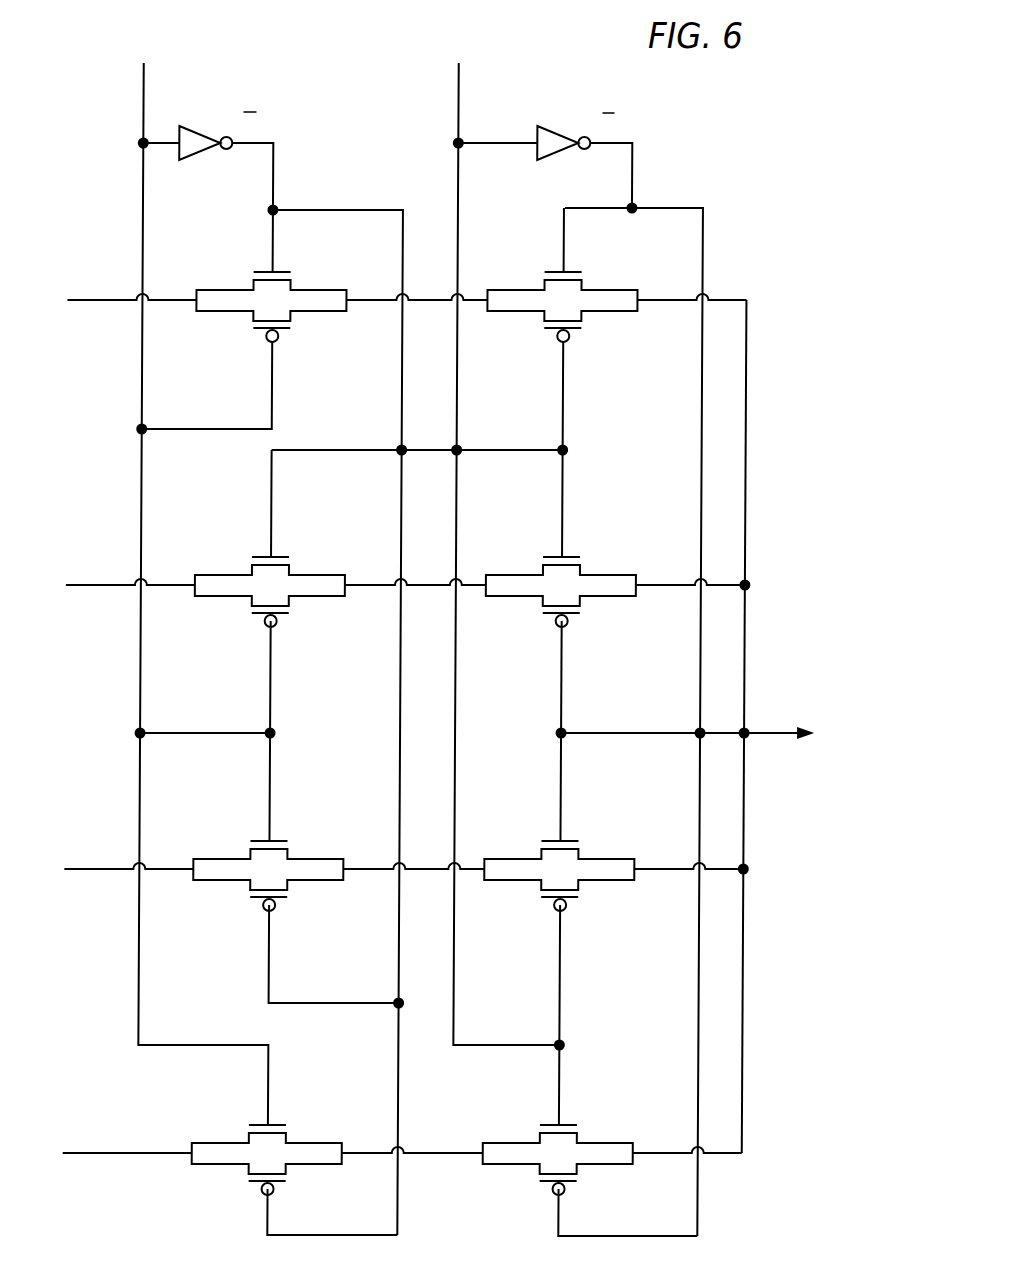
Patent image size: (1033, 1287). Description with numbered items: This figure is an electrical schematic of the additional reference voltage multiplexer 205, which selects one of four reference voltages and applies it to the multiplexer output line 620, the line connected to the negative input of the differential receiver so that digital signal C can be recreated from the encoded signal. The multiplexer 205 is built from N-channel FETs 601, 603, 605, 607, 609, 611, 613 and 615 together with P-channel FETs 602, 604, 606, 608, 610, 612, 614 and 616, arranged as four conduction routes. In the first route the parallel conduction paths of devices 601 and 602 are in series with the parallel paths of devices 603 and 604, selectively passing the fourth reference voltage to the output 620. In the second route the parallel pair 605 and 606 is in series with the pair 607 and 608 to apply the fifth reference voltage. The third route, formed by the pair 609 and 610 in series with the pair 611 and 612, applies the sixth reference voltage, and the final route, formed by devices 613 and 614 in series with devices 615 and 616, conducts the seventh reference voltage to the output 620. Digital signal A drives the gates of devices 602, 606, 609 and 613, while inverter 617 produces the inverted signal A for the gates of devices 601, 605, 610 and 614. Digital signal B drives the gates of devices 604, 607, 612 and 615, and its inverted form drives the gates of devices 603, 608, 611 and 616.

The multiplexer 205 is at (746, 222).
The N-channel FET 601 is at (284, 271).
The P-channel FET 602 is at (284, 333).
The N-channel FET 603 is at (575, 271).
The P-channel FET 604 is at (575, 333).
The N-channel FET 605 is at (284, 556).
The P-channel FET 606 is at (284, 618).
The N-channel FET 607 is at (575, 556).
The P-channel FET 608 is at (575, 618).
The N-channel FET 609 is at (284, 840).
The P-channel FET 610 is at (284, 902).
The N-channel FET 611 is at (575, 840).
The P-channel FET 612 is at (575, 902).
The N-channel FET 613 is at (284, 1124).
The P-channel FET 614 is at (284, 1186).
The N-channel FET 615 is at (575, 1124).
The P-channel FET 616 is at (575, 1186).
The inverter 617 is at (200, 128).
The multiplexer output line 620 is at (770, 733).